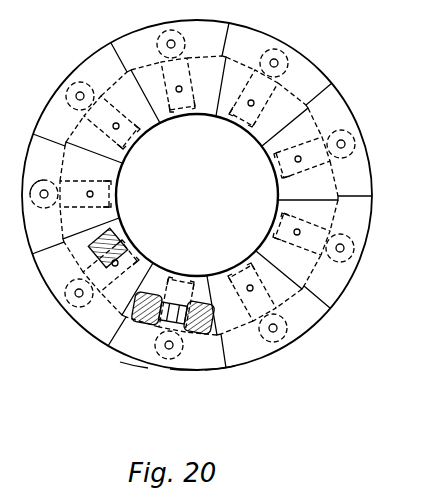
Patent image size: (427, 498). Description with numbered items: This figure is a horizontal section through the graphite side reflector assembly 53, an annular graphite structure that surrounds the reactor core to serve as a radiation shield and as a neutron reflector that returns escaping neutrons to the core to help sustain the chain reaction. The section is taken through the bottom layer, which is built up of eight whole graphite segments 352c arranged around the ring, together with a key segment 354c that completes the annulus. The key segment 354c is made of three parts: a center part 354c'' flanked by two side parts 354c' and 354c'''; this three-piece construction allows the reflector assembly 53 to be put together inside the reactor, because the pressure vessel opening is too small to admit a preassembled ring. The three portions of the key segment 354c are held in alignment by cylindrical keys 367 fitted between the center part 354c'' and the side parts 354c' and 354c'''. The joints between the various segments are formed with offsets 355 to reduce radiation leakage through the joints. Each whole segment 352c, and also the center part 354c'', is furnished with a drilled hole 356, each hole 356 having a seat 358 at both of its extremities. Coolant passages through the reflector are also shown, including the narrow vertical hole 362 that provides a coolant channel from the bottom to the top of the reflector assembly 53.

The graphite side reflector assembly 53 is at (292, 353).
The whole graphite segment 352c is at (341, 90).
The key segment 354c is at (197, 195).
The side part of key segment 354c' is at (114, 384).
The center part of key segment 354c'' is at (163, 396).
The side part of key segment 354c''' is at (220, 392).
The offset 355 is at (114, 123).
The drilled hole 356 is at (78, 92).
The seat 358 is at (30, 204).
The vertical hole 362 is at (163, 92).
The cylindrical key 367 is at (142, 270).